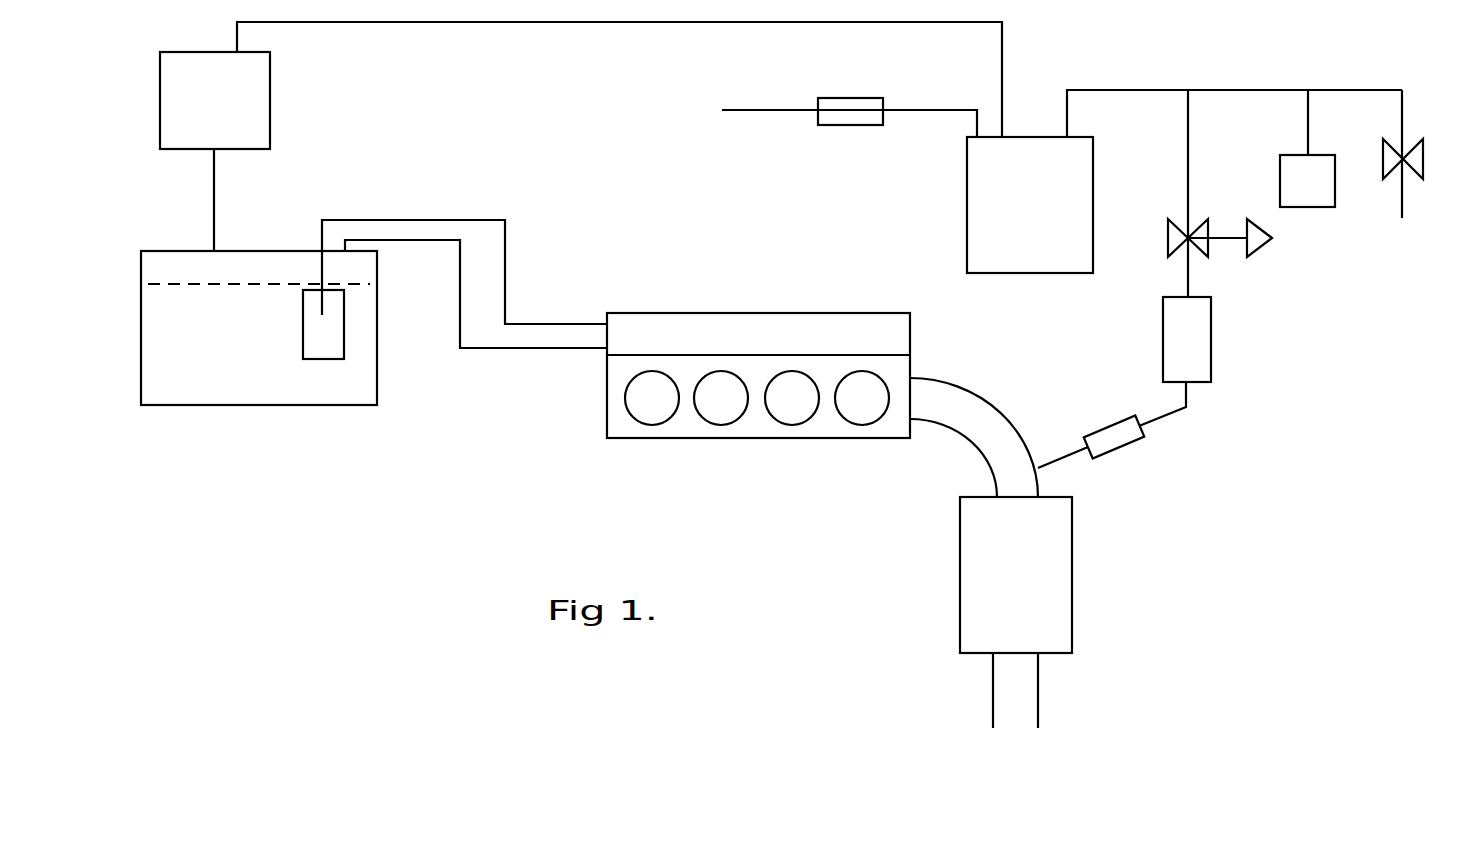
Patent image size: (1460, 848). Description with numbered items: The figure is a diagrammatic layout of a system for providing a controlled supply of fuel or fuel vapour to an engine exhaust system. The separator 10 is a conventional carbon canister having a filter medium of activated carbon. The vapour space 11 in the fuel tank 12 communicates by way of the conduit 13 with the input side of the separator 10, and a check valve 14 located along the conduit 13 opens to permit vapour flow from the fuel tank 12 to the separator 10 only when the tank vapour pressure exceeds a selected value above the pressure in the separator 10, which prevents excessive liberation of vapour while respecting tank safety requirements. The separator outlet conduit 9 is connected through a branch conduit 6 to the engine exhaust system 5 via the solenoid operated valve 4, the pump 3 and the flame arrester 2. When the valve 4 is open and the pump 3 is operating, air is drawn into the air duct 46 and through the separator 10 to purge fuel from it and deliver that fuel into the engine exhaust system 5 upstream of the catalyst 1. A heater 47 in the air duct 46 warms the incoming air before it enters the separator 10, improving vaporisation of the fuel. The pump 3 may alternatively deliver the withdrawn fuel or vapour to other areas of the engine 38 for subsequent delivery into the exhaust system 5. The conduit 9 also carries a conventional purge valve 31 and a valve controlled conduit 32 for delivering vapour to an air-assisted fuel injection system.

The catalyst 1 is at (1057, 617).
The flame arrester 2 is at (1108, 443).
The pump 3 is at (1200, 366).
The solenoid operated valve 4 is at (1207, 255).
The engine exhaust system 5 is at (983, 407).
The branch conduit 6 is at (1192, 157).
The separator outlet conduit 9 is at (1102, 90).
The separator 10 is at (958, 228).
The vapour space 11 is at (192, 266).
The fuel tank 12 is at (248, 392).
The conduit 13 is at (585, 23).
The check valve 14 is at (255, 115).
The purge valve 31 is at (1312, 197).
The valve controlled conduit 32 is at (1405, 193).
The engine 38 is at (750, 428).
The air duct 46 is at (762, 110).
The heater 47 is at (855, 98).